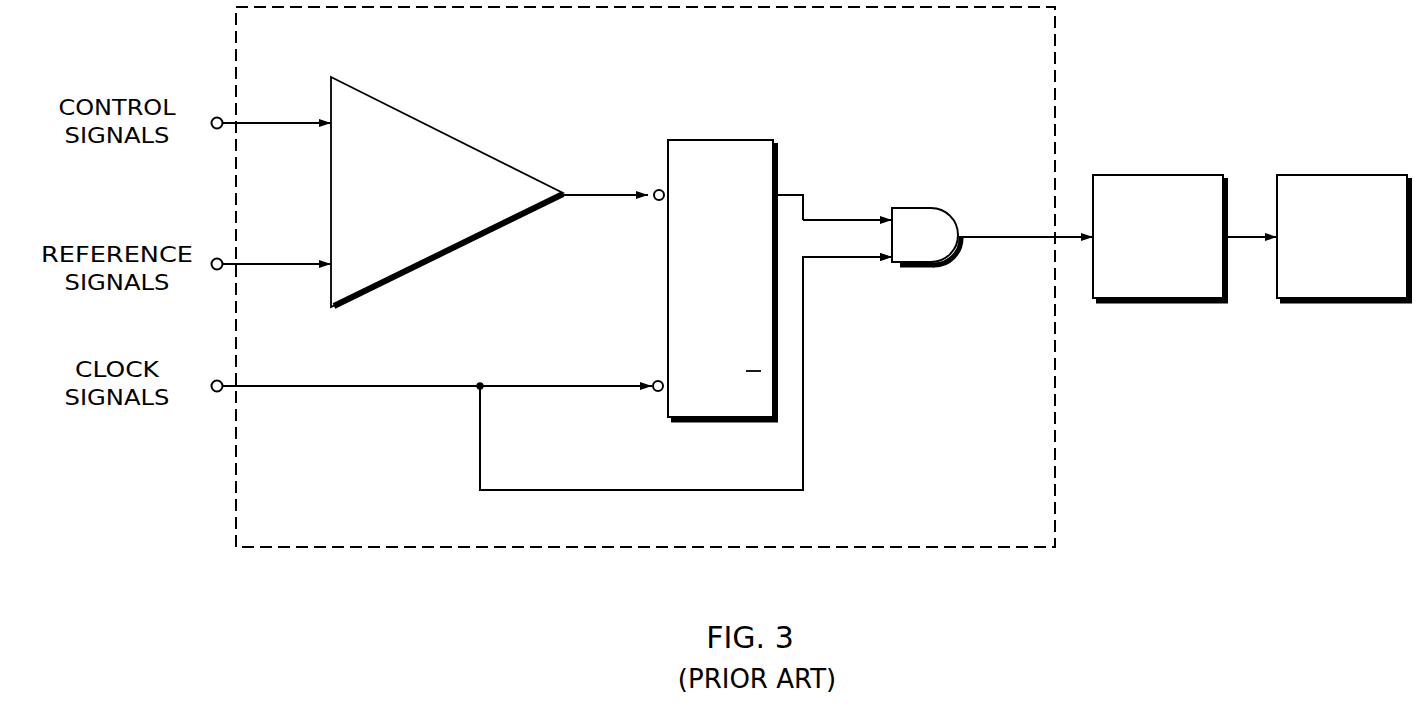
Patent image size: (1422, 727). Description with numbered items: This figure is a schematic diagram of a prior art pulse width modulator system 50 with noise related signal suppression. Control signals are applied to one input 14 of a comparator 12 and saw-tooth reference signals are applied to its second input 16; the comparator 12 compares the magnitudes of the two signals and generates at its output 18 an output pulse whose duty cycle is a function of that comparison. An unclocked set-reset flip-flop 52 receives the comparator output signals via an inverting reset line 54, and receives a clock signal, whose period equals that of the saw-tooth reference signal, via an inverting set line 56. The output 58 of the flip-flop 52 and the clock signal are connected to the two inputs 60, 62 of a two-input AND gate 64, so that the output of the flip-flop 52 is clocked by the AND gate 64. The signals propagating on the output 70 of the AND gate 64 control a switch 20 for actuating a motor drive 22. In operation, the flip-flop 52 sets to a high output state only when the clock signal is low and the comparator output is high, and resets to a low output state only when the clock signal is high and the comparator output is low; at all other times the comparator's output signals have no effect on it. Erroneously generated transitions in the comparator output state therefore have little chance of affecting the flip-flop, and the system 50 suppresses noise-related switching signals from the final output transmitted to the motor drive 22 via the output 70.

The comparator 12 is at (442, 265).
The input 14 is at (260, 122).
The second input 16 is at (250, 263).
The output 18 is at (578, 193).
The switch 20 is at (1160, 175).
The motor drive 22 is at (1325, 175).
The pulse width modulator system 50 is at (1003, 52).
The set-reset flip-flop 52 is at (728, 140).
The inverting reset line 54 is at (647, 200).
The inverting set line 56 is at (647, 381).
The output 58 is at (793, 193).
The input 60 is at (850, 218).
The input 62 is at (855, 258).
The AND gate 64 is at (912, 208).
The output 70 is at (1010, 237).